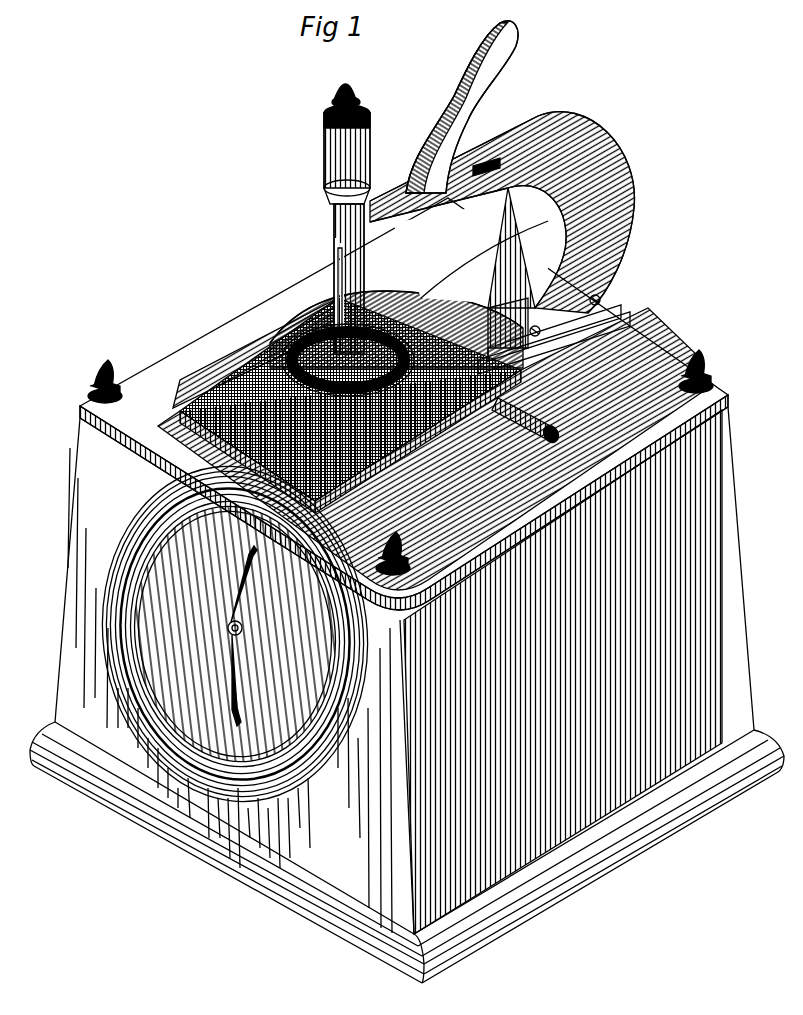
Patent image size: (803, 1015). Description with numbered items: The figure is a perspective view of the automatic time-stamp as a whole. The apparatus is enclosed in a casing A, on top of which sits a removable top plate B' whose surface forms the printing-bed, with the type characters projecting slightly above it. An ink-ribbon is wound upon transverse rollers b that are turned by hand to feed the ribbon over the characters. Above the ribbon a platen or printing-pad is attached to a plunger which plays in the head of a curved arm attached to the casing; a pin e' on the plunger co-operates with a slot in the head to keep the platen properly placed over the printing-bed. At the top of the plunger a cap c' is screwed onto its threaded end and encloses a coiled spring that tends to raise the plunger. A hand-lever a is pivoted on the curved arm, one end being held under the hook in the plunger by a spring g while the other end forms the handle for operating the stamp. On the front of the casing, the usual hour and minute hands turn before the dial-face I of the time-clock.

The casing A is at (407, 590).
The top plate B' is at (433, 444).
The handle lever a is at (462, 107).
The spring g is at (478, 154).
The transverse roller b is at (409, 280).
The cap c' is at (354, 213).
The pin e' is at (348, 342).
The dial-face I is at (235, 634).